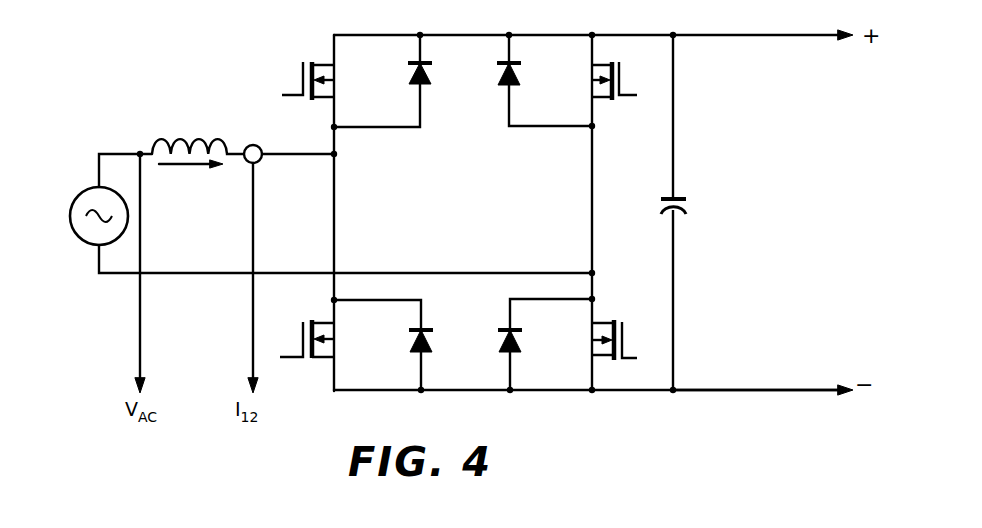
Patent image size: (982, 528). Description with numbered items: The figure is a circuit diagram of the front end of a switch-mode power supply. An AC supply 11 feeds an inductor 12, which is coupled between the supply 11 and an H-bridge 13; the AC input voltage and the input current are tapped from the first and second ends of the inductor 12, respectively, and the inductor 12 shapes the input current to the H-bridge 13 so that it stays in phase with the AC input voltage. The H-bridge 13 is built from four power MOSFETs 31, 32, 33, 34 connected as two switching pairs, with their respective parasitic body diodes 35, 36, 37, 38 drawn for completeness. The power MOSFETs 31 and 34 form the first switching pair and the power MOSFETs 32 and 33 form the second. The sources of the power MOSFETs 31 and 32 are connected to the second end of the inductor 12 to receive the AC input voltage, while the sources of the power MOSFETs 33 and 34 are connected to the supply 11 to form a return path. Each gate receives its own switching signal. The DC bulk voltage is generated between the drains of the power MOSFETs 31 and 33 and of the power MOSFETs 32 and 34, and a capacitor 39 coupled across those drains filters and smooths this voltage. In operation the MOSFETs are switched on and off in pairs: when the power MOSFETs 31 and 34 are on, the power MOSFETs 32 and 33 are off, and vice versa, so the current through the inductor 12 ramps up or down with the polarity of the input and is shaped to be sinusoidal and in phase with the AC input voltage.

The supply 11 is at (80, 197).
The inductor 12 is at (172, 118).
The H-bridge 13 is at (699, 408).
The power MOSFET 31 is at (302, 65).
The power MOSFET 32 is at (302, 336).
The power MOSFET 33 is at (621, 72).
The power MOSFET 34 is at (622, 331).
The parasitic body diode 35 is at (412, 78).
The parasitic body diode 36 is at (412, 330).
The parasitic body diode 37 is at (519, 78).
The parasitic body diode 38 is at (519, 329).
The capacitor 39 is at (682, 197).